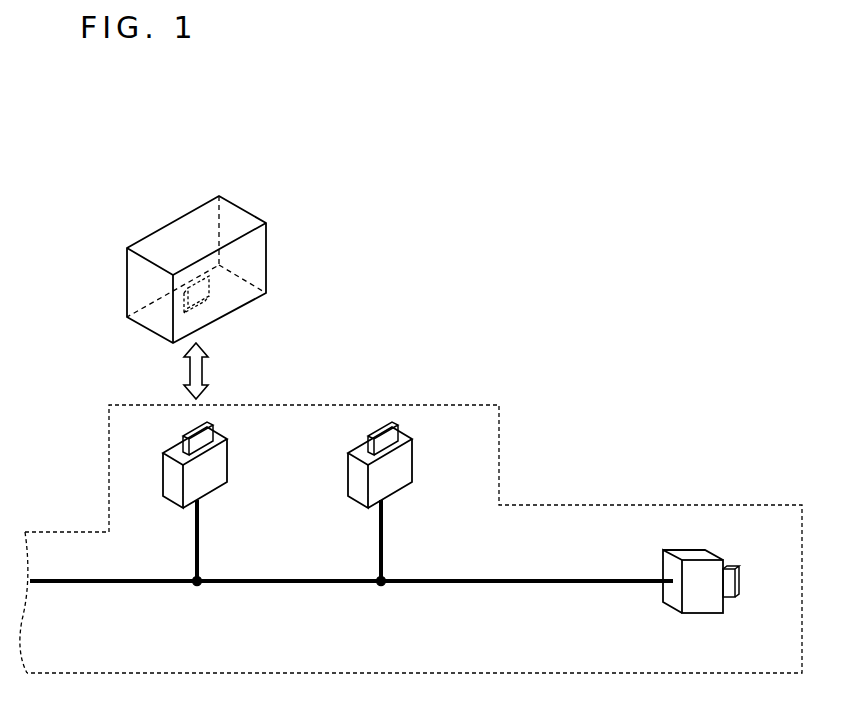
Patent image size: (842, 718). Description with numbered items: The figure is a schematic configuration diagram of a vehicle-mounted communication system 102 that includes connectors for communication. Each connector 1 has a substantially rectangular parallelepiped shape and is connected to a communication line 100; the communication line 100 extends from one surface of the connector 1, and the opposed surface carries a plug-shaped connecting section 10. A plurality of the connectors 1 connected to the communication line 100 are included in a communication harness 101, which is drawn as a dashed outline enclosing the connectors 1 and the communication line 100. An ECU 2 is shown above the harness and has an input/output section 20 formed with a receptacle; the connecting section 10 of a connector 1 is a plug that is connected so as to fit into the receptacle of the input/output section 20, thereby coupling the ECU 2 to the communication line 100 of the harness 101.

The connector for communication 1 is at (172, 496).
The ECU 2 is at (147, 321).
The connecting section 10 is at (183, 437).
The input/output section 20 is at (210, 303).
The communication line 100 is at (125, 584).
The communication harness 101 is at (575, 507).
The vehicle-mounted communication system 102 is at (83, 227).